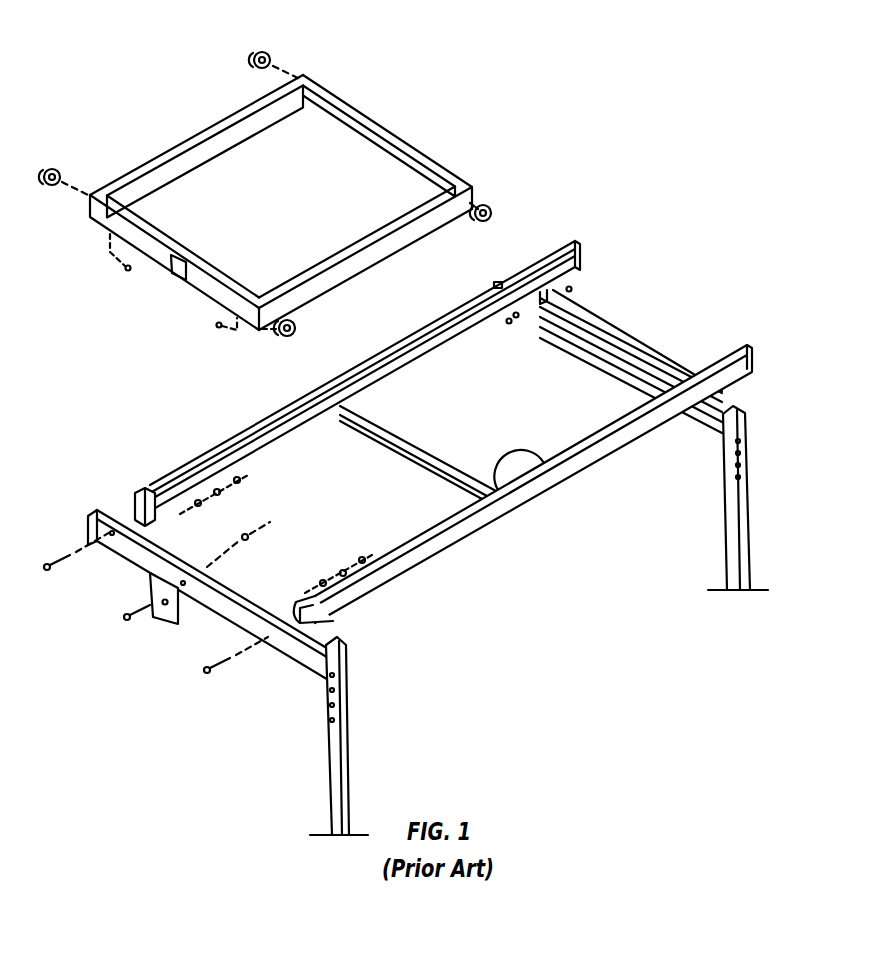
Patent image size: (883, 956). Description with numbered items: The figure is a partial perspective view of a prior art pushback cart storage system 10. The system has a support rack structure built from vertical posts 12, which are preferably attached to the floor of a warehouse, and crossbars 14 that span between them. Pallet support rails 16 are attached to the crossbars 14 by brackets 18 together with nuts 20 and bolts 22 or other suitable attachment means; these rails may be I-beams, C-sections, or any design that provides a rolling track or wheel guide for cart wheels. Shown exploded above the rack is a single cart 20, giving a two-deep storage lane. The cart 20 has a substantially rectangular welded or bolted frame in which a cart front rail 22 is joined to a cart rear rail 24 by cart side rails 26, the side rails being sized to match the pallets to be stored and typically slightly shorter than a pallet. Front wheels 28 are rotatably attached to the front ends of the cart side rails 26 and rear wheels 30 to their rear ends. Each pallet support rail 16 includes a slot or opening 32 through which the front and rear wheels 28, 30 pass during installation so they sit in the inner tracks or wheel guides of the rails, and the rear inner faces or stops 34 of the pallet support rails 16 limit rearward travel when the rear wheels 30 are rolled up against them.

The pushback cart storage system 10 is at (600, 128).
The vertical posts 12 is at (735, 530).
The crossbars 14 is at (403, 452).
The pallet support rails 16 is at (395, 345).
The brackets 18 is at (330, 620).
The cart 20 is at (387, 105).
The bolts 22 is at (202, 285).
The cart rear rail 24 is at (413, 155).
The cart side rails 26 is at (163, 176).
The front wheels 28 is at (296, 325).
The rear wheels 30 is at (497, 212).
The slot or opening 32 is at (342, 380).
The rear inner faces or stops 34 is at (574, 287).